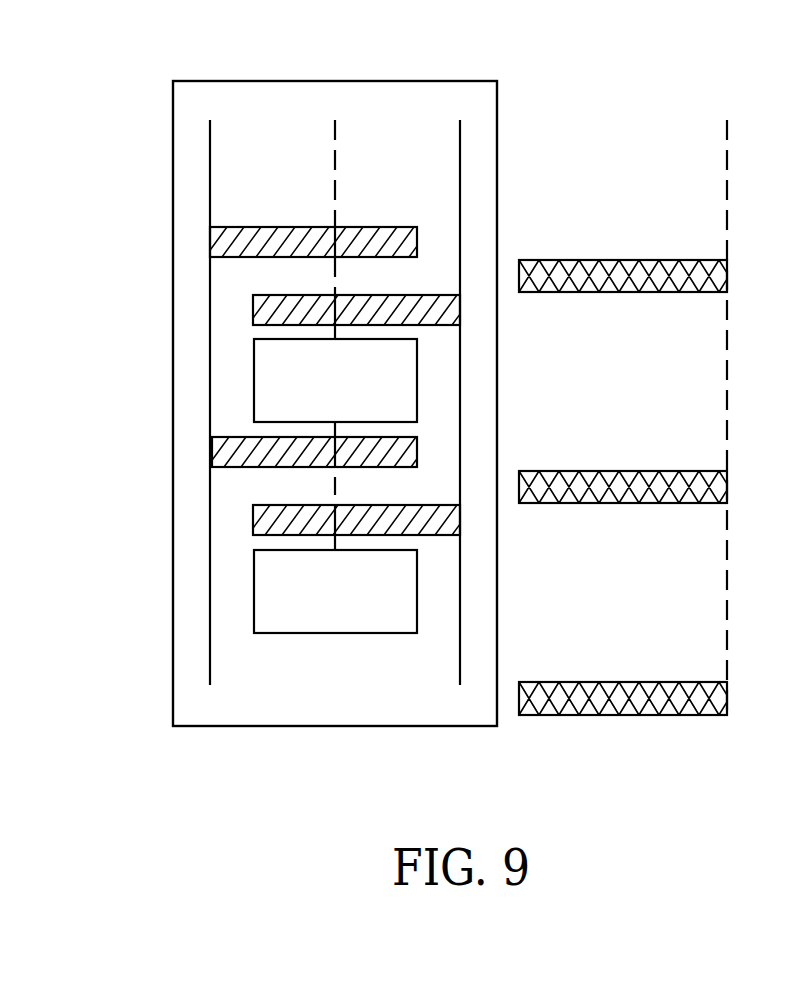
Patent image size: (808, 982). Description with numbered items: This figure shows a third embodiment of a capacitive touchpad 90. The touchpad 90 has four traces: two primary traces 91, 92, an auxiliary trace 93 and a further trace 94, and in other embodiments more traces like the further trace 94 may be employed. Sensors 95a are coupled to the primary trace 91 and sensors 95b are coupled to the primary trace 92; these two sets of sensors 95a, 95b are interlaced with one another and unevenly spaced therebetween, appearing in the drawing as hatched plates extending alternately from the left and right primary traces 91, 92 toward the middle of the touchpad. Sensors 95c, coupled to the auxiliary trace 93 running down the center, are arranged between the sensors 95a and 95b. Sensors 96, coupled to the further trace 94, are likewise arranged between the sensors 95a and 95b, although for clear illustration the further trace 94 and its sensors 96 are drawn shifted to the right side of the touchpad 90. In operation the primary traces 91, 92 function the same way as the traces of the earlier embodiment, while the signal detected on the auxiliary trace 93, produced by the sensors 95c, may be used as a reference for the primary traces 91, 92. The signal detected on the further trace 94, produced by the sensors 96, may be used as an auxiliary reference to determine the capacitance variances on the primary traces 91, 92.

The capacitive touchpad 90 is at (298, 81).
The primary trace 91 is at (210, 132).
The primary trace 92 is at (460, 130).
The auxiliary trace 93 is at (337, 150).
The further trace 94 is at (727, 132).
The sensor 95a is at (270, 227).
The sensor 95b is at (440, 295).
The sensor 95c is at (254, 381).
The sensor 96 is at (622, 260).